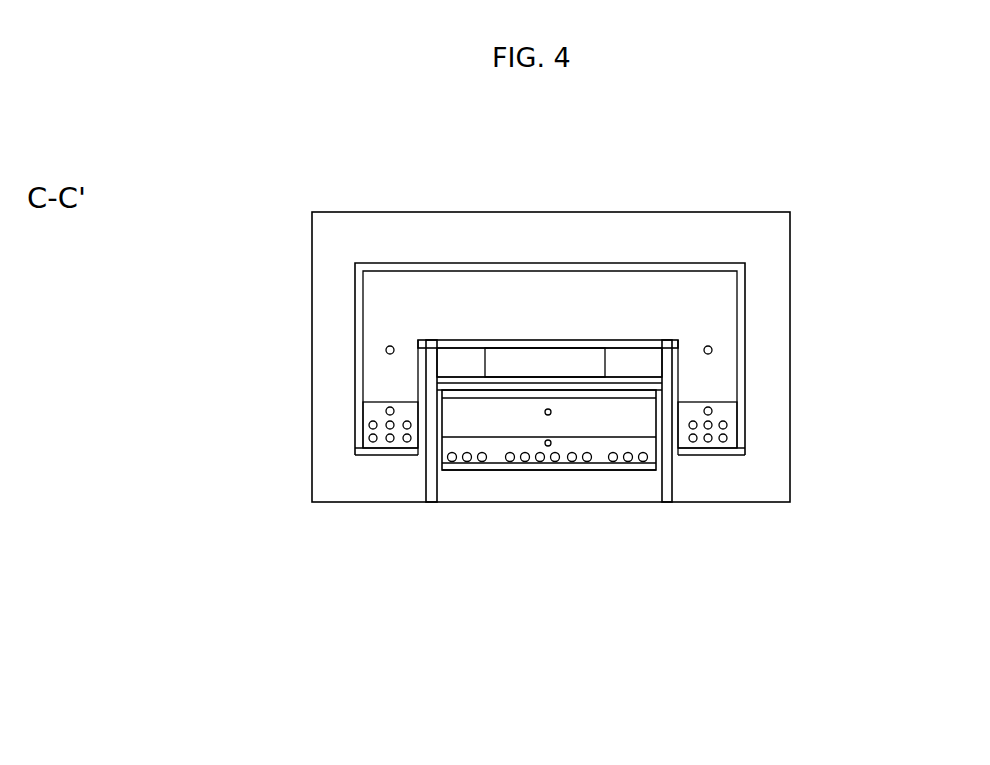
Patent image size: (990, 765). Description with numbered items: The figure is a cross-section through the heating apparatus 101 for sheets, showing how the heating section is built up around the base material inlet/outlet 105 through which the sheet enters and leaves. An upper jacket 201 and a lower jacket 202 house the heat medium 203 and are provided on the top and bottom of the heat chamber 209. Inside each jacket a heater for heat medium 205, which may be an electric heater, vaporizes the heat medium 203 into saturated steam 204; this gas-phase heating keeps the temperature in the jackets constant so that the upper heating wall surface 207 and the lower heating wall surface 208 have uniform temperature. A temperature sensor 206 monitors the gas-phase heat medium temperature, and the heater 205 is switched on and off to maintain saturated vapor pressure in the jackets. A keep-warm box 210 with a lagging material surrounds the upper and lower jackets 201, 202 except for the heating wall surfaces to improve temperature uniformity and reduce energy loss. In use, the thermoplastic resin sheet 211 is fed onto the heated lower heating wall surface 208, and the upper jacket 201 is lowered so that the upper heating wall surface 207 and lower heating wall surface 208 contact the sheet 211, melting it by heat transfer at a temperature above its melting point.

The heating apparatus 101 is at (271, 147).
The base material inlet/outlet 105 is at (468, 375).
The upper jacket 201 is at (673, 262).
The lower jacket 202 is at (520, 472).
The heat medium 203 is at (678, 457).
The saturated steam 204 is at (463, 425).
The heater for heat medium 205 is at (620, 467).
The temperature sensor 206 is at (547, 412).
The upper heating wall surface 207 is at (622, 340).
The lower heating wall surface 208 is at (587, 390).
The heat chamber 209 is at (640, 365).
The keep-warm box 210 is at (763, 288).
The thermoplastic resin sheet 211 is at (523, 360).